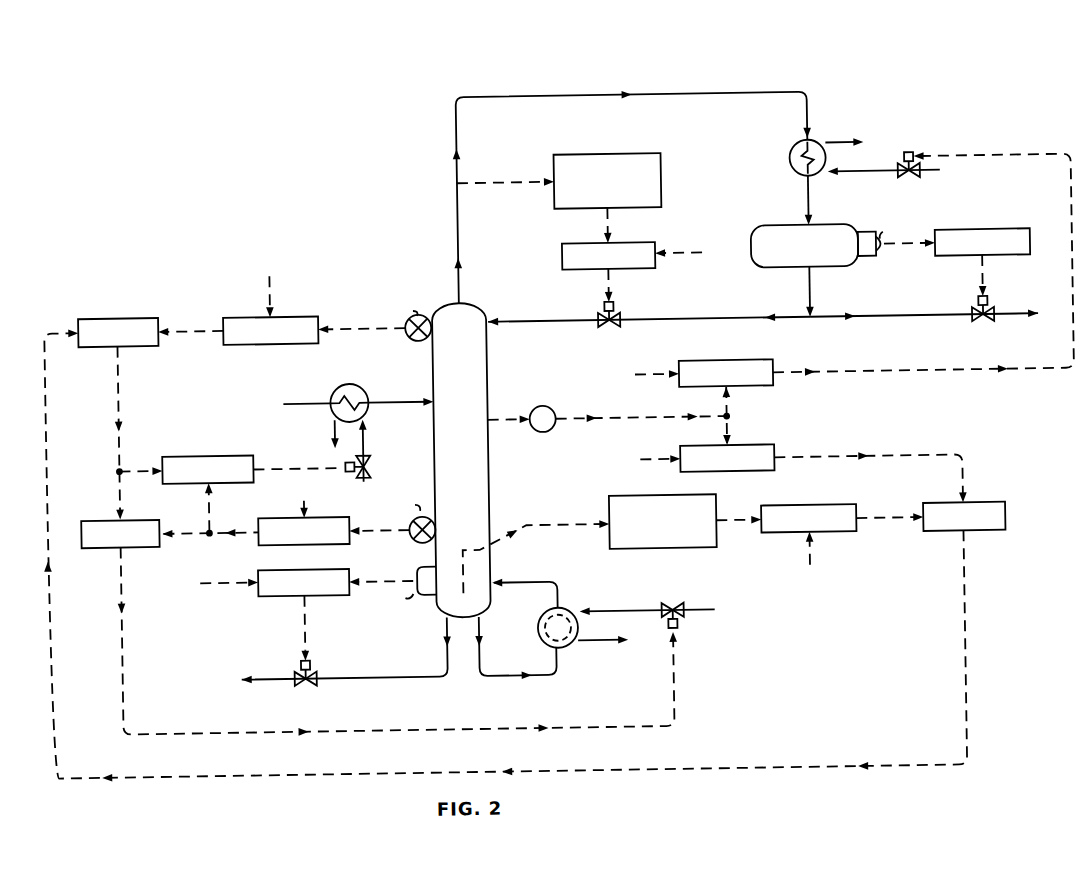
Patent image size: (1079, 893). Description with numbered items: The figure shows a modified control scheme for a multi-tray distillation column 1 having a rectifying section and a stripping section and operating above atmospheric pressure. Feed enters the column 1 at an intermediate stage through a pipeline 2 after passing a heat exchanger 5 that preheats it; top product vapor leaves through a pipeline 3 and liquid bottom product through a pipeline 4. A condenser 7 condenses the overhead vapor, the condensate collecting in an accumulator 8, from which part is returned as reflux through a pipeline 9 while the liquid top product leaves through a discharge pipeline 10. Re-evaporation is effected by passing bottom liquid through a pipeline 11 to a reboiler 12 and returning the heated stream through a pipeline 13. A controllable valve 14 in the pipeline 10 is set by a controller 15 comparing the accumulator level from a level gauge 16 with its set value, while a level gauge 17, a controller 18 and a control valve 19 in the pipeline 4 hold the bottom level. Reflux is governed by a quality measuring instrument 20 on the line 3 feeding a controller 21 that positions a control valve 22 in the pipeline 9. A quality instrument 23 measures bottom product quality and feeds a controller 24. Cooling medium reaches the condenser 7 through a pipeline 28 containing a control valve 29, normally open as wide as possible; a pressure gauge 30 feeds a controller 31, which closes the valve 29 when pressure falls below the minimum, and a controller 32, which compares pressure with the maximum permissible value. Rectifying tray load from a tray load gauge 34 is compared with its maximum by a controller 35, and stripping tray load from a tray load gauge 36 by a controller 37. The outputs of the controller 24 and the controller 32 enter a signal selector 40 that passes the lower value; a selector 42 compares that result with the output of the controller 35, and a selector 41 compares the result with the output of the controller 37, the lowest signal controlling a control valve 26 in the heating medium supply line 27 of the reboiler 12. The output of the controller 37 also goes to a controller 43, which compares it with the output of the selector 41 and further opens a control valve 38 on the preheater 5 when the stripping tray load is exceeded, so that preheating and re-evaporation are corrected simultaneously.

The multi-tray distillation column 1 is at (454, 470).
The feed pipeline 2 is at (319, 400).
The top product discharge pipeline 3 is at (461, 138).
The bottom product pipeline 4 is at (384, 675).
The heat exchanger 5 is at (343, 386).
The condenser 7 is at (799, 151).
The accumulator 8 is at (792, 229).
The reflux pipeline 9 is at (700, 321).
The discharge pipeline 10 is at (893, 321).
The pipeline 11 is at (497, 675).
The reboiler 12 is at (540, 614).
The pipeline 13 is at (518, 582).
The controllable valve 14 is at (985, 330).
The controller 15 is at (988, 236).
The level gauge 16 is at (886, 256).
The level gauge 17 is at (410, 570).
The controller 18 is at (283, 592).
The control valve 19 is at (303, 683).
The quality measuring instrument 20 is at (604, 155).
The controller 21 is at (585, 271).
The control valve 22 is at (611, 330).
The quality instrument 23 is at (607, 515).
The quality controller 24 is at (822, 509).
The control valve 26 is at (677, 605).
The heating medium supply line 27 is at (602, 612).
The cooling medium pipeline 28 is at (847, 176).
The control valve 29 is at (913, 184).
The pressure gauge 30 is at (538, 408).
The controller 31 is at (737, 363).
The maximum pressure controller 32 is at (752, 448).
The tray load gauge 34 is at (418, 340).
The controller 35 is at (292, 313).
The tray load gauge 36 is at (411, 538).
The controller 37 is at (262, 542).
The control valve 38 is at (371, 470).
The signal selector 40 is at (990, 509).
The selector 41 is at (130, 514).
The selector 42 is at (125, 312).
The controller 43 is at (222, 451).